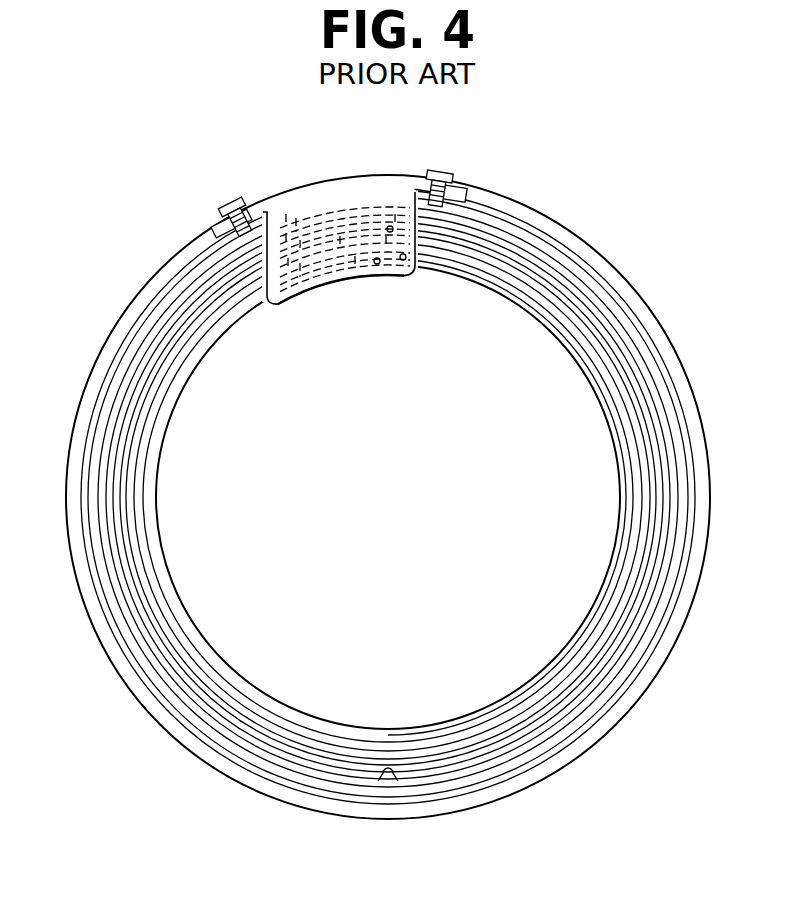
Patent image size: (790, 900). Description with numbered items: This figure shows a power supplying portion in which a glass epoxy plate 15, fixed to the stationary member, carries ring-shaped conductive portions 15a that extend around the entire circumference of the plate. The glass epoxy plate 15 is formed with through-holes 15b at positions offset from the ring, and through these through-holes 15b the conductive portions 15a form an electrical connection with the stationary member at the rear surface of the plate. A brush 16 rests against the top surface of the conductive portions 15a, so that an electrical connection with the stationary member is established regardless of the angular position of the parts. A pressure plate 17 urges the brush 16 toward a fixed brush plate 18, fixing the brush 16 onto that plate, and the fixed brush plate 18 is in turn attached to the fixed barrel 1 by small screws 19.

The fixed barrel 1 is at (510, 228).
The glass epoxy plate 15 is at (506, 316).
The ring-shaped conductive portions 15a is at (597, 303).
The through-holes 15b is at (405, 258).
The brush 16 is at (353, 213).
The pressure plate 17 is at (331, 265).
The fixed brush plate 18 is at (370, 197).
The small screws 19 is at (443, 172).